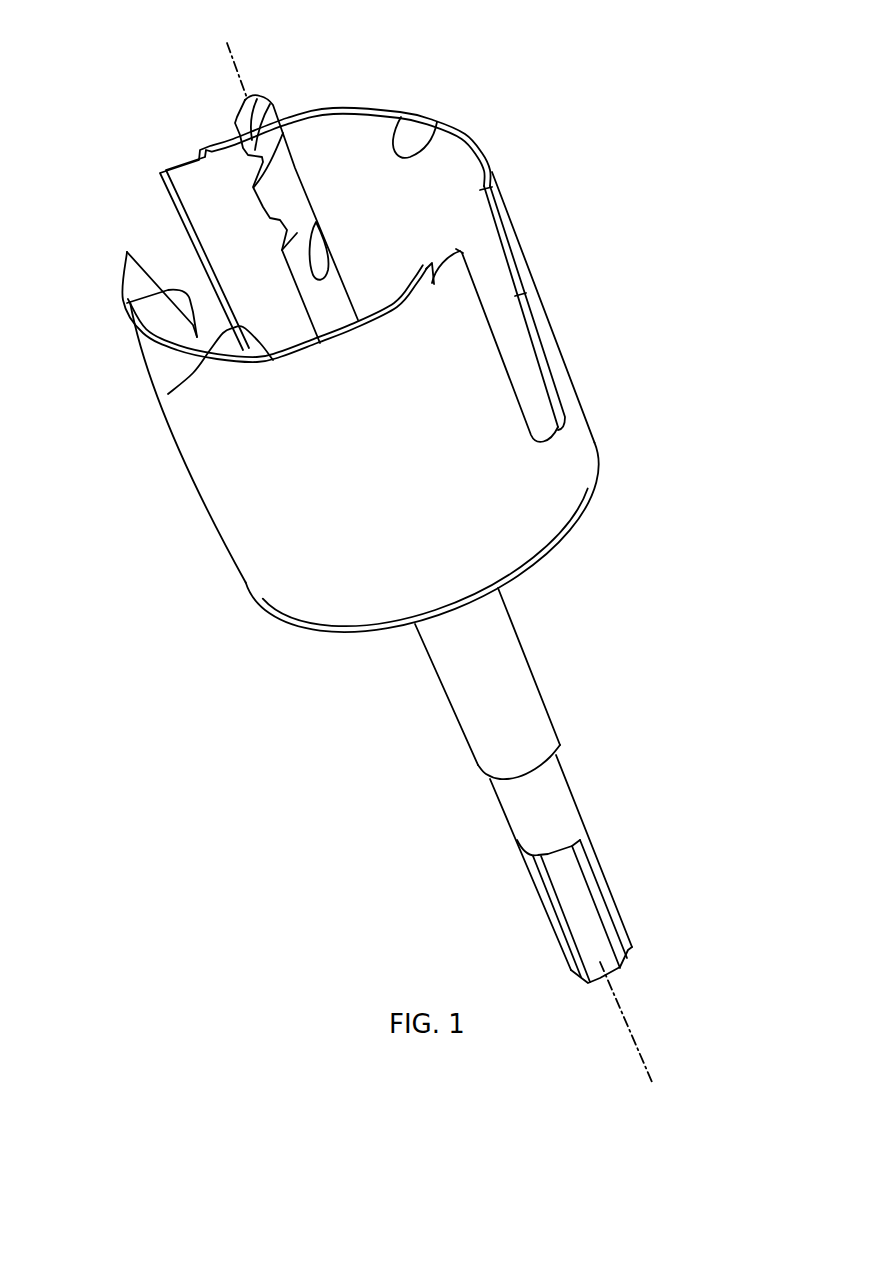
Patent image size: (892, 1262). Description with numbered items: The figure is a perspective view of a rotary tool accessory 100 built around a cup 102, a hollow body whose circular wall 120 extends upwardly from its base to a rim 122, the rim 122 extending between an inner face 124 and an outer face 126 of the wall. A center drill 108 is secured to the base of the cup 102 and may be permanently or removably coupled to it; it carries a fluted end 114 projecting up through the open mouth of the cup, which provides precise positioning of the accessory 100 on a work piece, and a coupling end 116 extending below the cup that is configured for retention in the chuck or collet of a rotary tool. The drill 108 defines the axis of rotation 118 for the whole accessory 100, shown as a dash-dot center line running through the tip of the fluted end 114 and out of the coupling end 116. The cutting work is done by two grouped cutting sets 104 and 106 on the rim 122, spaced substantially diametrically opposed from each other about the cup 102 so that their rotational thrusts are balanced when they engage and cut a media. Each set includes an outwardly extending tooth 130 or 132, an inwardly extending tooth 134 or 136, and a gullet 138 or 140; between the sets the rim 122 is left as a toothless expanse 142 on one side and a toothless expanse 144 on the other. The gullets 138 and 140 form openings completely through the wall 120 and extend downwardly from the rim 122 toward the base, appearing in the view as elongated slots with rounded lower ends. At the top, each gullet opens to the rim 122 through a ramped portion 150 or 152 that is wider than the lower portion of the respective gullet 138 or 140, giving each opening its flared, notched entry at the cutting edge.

The rotary tool accessory 100 is at (672, 135).
The cup 102 is at (200, 490).
The grouped cutting set 104 is at (448, 355).
The grouped cutting set 106 is at (155, 132).
The center drill 108 is at (566, 775).
The fluted end 114 is at (295, 170).
The coupling end 116 is at (607, 897).
The axis of rotation 118 is at (240, 72).
The circular wall 120 is at (470, 143).
The rim 122 is at (317, 360).
The inner face 124 is at (442, 147).
The outer face 126 is at (528, 277).
The outwardly extending tooth 130 is at (467, 245).
The outwardly extending tooth 132 is at (160, 173).
The inwardly extending tooth 134 is at (418, 270).
The inwardly extending tooth 136 is at (200, 157).
The gullet 138 is at (529, 351).
The gullet 140 is at (127, 303).
The toothless expanse 142 is at (168, 394).
The toothless expanse 144 is at (376, 112).
The ramped portion 150 is at (490, 192).
The ramped portion 152 is at (157, 273).